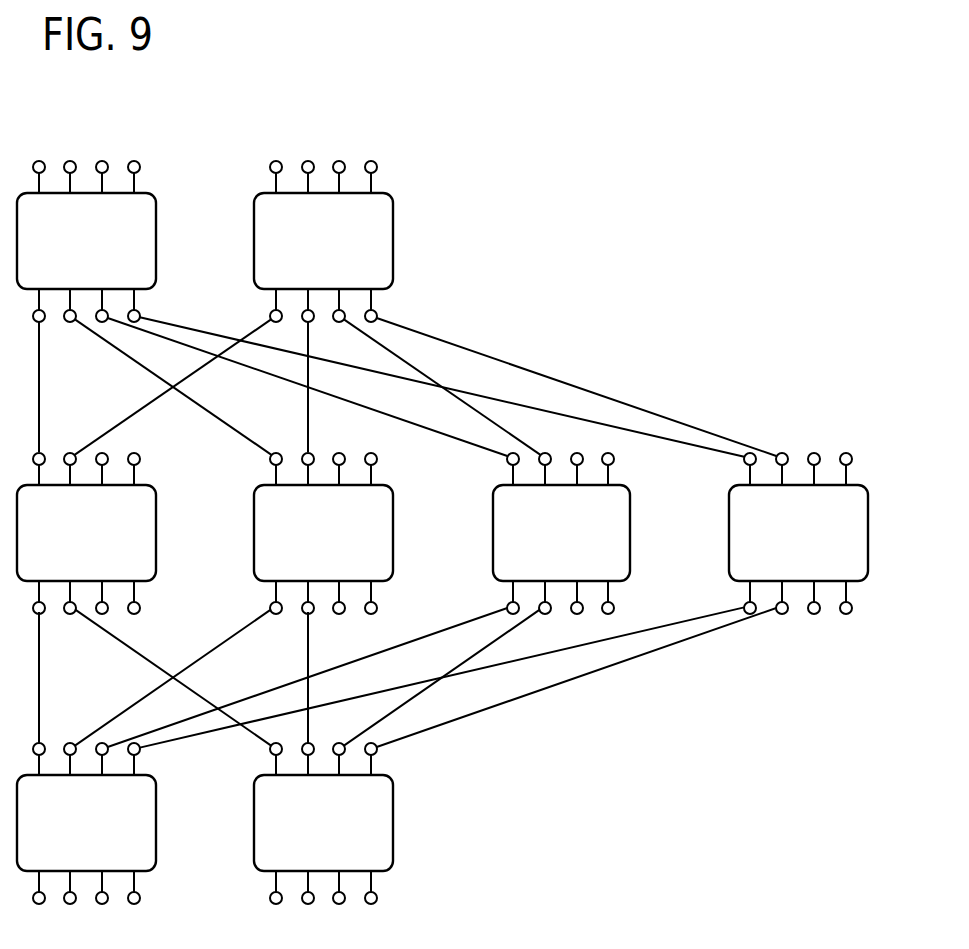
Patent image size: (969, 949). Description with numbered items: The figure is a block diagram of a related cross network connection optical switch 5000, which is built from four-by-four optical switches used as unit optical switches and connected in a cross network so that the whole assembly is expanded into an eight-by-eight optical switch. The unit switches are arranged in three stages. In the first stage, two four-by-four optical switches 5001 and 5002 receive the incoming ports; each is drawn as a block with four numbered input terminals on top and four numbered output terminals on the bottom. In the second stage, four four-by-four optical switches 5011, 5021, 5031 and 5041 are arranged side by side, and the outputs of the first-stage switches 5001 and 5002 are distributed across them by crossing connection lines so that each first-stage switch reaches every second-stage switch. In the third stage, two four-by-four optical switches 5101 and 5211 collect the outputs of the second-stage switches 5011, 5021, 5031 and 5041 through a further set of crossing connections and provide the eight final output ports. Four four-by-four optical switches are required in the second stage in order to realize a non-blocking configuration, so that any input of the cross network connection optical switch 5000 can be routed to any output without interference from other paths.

The cross network connection optical switch 5000 is at (529, 158).
The 4×4 optical switch 5001 is at (158, 238).
The 4×4 optical switch 5002 is at (395, 238).
The 4×4 optical switch 5011 is at (158, 528).
The 4×4 optical switch 5021 is at (395, 528).
The 4×4 optical switch 5031 is at (632, 517).
The 4×4 optical switch 5041 is at (728, 550).
The 4×4 optical switch 5101 is at (158, 818).
The 4×4 optical switch 5211 is at (395, 818).